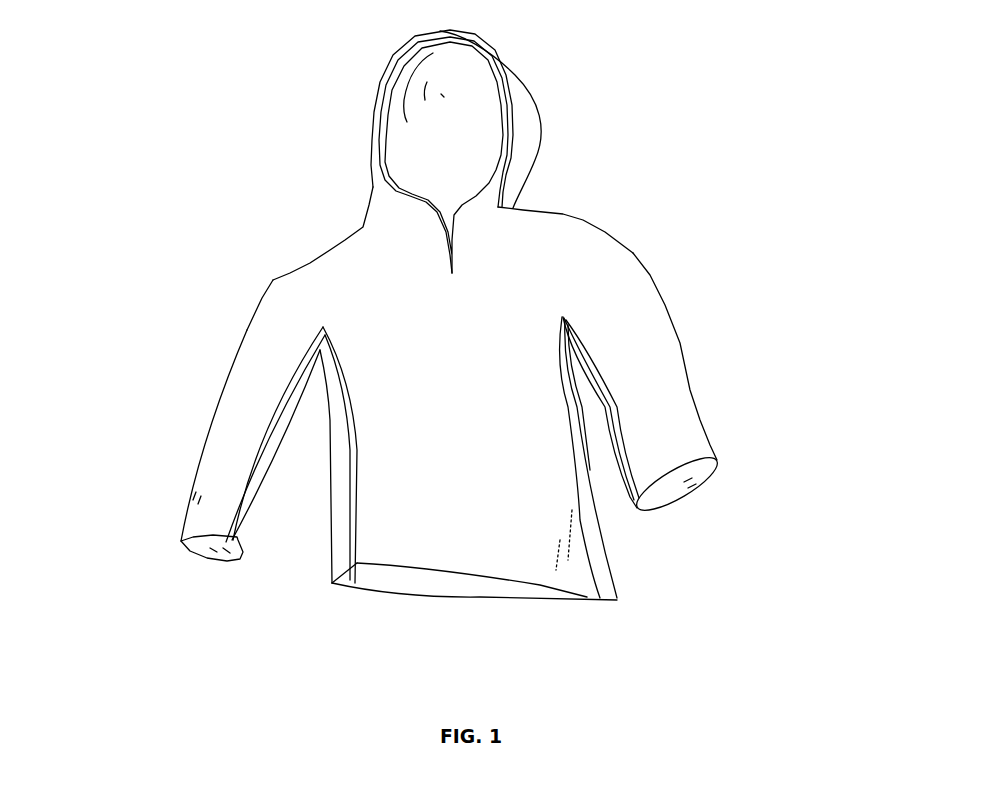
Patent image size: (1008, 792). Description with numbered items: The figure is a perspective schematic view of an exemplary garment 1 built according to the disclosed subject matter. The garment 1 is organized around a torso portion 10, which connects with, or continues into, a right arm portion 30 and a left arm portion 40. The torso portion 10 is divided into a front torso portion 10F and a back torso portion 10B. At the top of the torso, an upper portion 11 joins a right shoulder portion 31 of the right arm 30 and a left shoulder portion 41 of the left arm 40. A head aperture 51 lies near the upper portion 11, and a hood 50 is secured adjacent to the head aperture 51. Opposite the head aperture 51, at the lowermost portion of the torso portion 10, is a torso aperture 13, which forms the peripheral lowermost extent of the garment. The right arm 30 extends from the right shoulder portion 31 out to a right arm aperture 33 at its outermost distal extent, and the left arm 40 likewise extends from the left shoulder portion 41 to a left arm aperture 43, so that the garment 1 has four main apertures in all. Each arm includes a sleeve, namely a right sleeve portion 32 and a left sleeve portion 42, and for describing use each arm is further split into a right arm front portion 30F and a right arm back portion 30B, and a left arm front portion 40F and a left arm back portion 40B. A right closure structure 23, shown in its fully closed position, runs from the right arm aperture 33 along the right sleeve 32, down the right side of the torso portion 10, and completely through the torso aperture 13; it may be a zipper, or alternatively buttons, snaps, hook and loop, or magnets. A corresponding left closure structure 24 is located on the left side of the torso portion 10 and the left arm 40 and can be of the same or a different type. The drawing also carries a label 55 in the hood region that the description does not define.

The garment 1 is at (196, 122).
The torso portion 10 is at (467, 503).
The back torso portion 10B is at (393, 575).
The front torso portion 10F is at (540, 490).
The upper portion 11 is at (402, 290).
The torso aperture 13 is at (550, 603).
The right closure structure 23 is at (350, 507).
The left closure structure 24 is at (615, 403).
The right arm portion 30 is at (235, 402).
The right arm back portion 30B is at (260, 500).
The right arm front portion 30F is at (187, 513).
The right shoulder portion 31 is at (290, 283).
The right sleeve portion 32 is at (218, 446).
The right arm aperture 33 is at (222, 550).
The left arm portion 40 is at (642, 340).
The left arm back portion 40B is at (670, 490).
The left arm front portion 40F is at (668, 447).
The left shoulder portion 41 is at (540, 242).
The left sleeve portion 42 is at (680, 403).
The left arm aperture 43 is at (705, 487).
The hood 50 is at (527, 102).
The head aperture 51 is at (380, 118).
The hood drawstring closure 55 is at (447, 250).